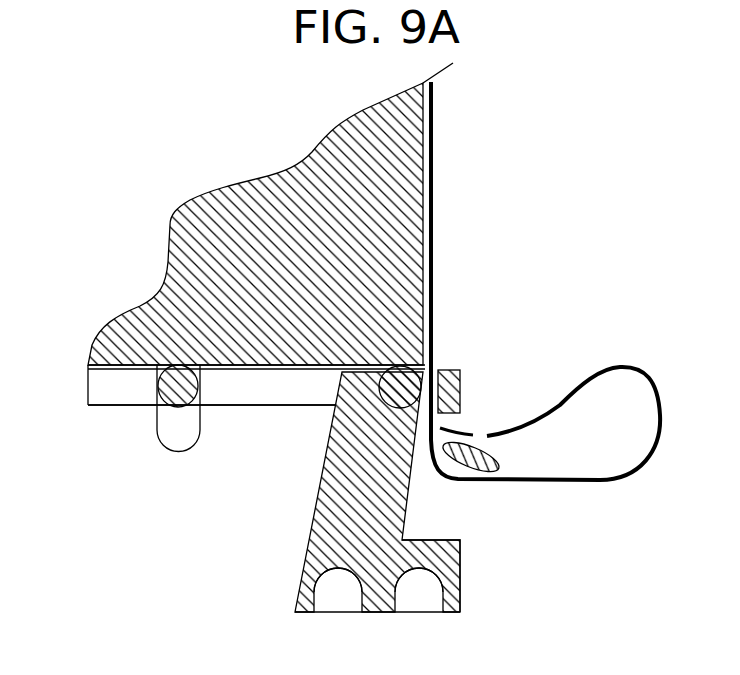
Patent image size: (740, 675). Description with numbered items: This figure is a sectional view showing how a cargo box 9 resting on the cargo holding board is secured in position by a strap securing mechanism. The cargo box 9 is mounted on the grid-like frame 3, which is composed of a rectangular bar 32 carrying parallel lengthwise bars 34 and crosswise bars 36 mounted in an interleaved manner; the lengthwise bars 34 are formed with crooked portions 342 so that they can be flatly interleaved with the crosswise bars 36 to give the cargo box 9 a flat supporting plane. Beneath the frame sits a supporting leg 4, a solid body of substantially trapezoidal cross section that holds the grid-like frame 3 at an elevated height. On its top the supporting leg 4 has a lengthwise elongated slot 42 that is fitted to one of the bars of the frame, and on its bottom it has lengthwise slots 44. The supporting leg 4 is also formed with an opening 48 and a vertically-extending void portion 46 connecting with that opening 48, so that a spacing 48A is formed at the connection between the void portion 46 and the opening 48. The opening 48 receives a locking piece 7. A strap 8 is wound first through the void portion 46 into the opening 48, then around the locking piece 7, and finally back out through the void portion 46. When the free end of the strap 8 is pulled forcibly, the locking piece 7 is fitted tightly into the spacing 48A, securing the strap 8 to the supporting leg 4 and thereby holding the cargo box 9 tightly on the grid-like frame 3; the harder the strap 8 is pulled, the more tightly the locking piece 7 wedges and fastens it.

The cargo box 9 is at (350, 163).
The rectangular bar 32 is at (434, 362).
The crosswise bars 36 is at (276, 401).
The grid-like frame 3 is at (263, 405).
The lengthwise bars 34 is at (157, 420).
The crooked portions 342 is at (167, 445).
The lengthwise elongated slot 42 is at (386, 372).
The opening 48 is at (425, 515).
The supporting leg 4 is at (460, 599).
The lengthwise slots 44 is at (395, 596).
The void portion 46 is at (455, 370).
The spacing 48A is at (437, 419).
The strap 8 is at (605, 367).
The locking piece 7 is at (500, 453).